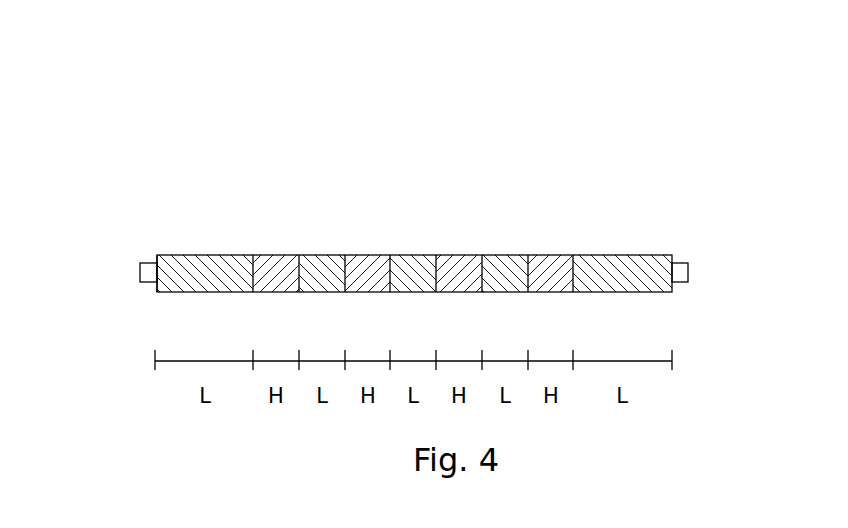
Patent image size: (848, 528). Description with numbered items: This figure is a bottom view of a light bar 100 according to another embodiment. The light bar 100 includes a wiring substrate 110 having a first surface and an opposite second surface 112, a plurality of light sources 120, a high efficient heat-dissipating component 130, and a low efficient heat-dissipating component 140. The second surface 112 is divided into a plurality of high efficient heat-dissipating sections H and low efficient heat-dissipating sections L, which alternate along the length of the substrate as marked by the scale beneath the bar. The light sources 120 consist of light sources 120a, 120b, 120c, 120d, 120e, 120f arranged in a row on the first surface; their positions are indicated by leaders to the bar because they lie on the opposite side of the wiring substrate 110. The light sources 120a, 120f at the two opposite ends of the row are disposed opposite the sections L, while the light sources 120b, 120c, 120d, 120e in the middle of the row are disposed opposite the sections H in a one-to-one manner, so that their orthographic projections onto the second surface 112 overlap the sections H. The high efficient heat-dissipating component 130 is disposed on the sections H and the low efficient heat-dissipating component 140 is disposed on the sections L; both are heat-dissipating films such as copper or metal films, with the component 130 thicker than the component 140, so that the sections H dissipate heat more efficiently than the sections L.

The light bar 100 is at (101, 53).
The wiring substrate 110 is at (148, 262).
The second surface 112 is at (155, 292).
The light sources 120 is at (720, 135).
The light source 120a is at (201, 255).
The light source 120b is at (293, 255).
The light source 120c is at (385, 255).
The light source 120d is at (475, 255).
The light source 120e is at (565, 255).
The light source 120f is at (655, 255).
The high efficient heat-dissipating component 130 is at (263, 292).
The low efficient heat-dissipating component 140 is at (605, 292).